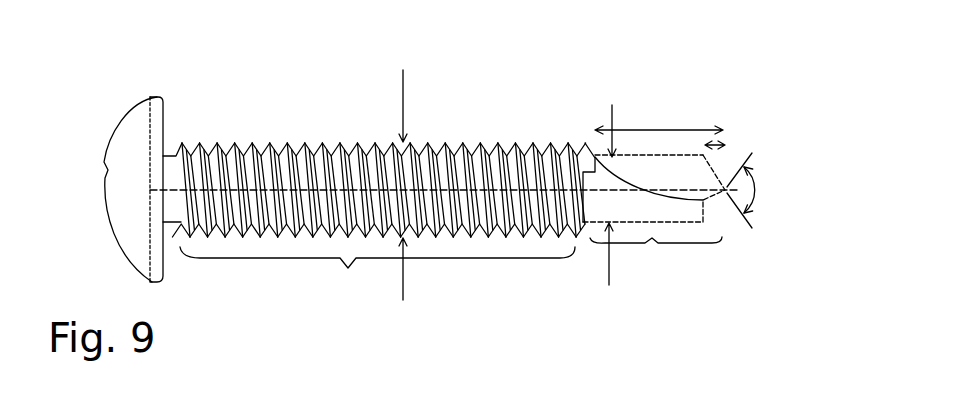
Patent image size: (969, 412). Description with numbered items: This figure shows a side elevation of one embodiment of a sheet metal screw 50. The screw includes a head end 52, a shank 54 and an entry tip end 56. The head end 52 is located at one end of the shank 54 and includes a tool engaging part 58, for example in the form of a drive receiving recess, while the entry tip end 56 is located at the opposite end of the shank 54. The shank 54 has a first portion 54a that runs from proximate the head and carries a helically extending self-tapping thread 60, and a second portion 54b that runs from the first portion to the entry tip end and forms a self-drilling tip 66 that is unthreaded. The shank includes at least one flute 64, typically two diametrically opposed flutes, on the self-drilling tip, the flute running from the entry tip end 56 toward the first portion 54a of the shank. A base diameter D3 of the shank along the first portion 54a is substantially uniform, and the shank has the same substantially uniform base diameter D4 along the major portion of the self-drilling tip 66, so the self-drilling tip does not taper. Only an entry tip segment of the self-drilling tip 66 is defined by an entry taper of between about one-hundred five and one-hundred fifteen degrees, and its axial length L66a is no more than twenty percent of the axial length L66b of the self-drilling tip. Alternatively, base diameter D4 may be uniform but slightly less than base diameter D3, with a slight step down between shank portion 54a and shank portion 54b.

The sheet metal screw 50 is at (458, 58).
The head end 52 is at (152, 82).
The shank 54 is at (227, 153).
The first portion of the shank 54a is at (377, 279).
The second portion of the shank 54b is at (656, 260).
The entry tip end 56 is at (719, 233).
The tool engaging part 58 is at (108, 208).
The self-tapping thread 60 is at (200, 155).
The flute 64 is at (725, 145).
The self-drilling tip 66 is at (659, 103).
The axial length of the entry tip segment L66a is at (672, 192).
The axial length of the self-drilling tip L66b is at (693, 130).
The base diameter of the shank along the first portion D3 is at (403, 108).
The base diameter along the self-drilling tip D4 is at (612, 105).